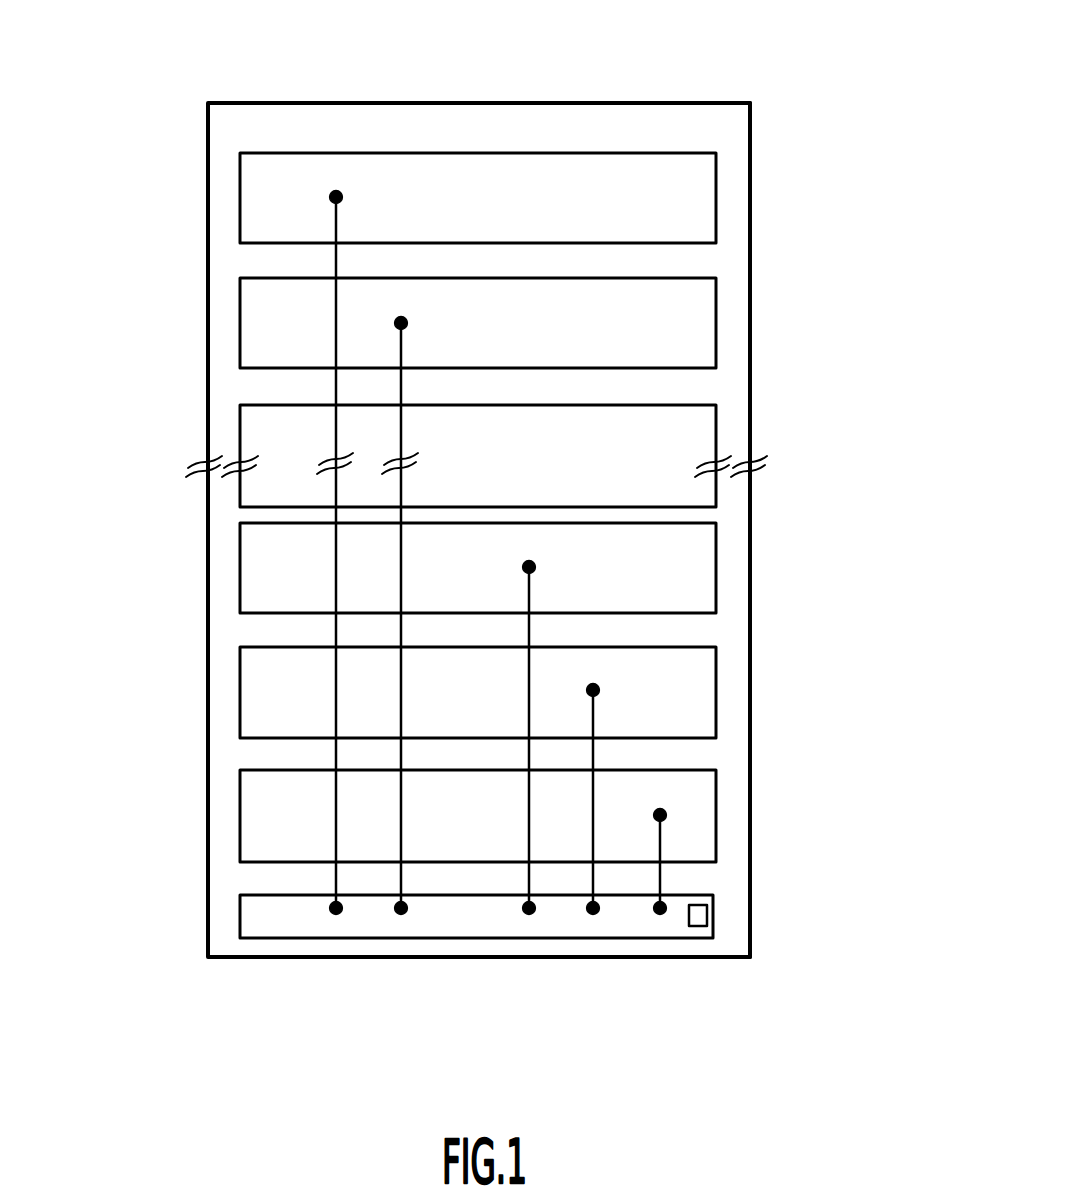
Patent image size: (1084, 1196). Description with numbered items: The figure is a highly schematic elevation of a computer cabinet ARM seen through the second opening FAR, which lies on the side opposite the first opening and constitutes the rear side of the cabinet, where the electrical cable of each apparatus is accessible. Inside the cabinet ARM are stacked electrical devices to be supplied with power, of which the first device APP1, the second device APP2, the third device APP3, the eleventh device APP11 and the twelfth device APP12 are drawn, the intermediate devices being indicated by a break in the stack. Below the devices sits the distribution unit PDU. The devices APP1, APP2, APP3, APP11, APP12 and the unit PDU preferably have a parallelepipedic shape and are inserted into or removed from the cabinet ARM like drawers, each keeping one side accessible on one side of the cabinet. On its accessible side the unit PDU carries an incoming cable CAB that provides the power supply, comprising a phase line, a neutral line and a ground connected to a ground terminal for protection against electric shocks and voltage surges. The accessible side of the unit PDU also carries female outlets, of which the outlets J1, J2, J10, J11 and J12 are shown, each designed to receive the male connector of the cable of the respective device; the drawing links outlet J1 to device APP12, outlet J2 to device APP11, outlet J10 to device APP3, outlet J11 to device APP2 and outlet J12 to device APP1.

The cabinet ARM is at (670, 102).
The second opening FAR is at (735, 130).
The electrical device APP12 is at (240, 193).
The electrical device APP11 is at (240, 312).
The electrical device APP3 is at (240, 592).
The electrical device APP2 is at (240, 702).
The electrical device APP1 is at (240, 817).
The distribution unit PDU is at (715, 927).
The incoming cable CAB is at (708, 915).
The female outlet J1 is at (333, 915).
The female outlet J2 is at (399, 915).
The female outlet J10 is at (527, 915).
The female outlet J11 is at (591, 915).
The female outlet J12 is at (659, 915).